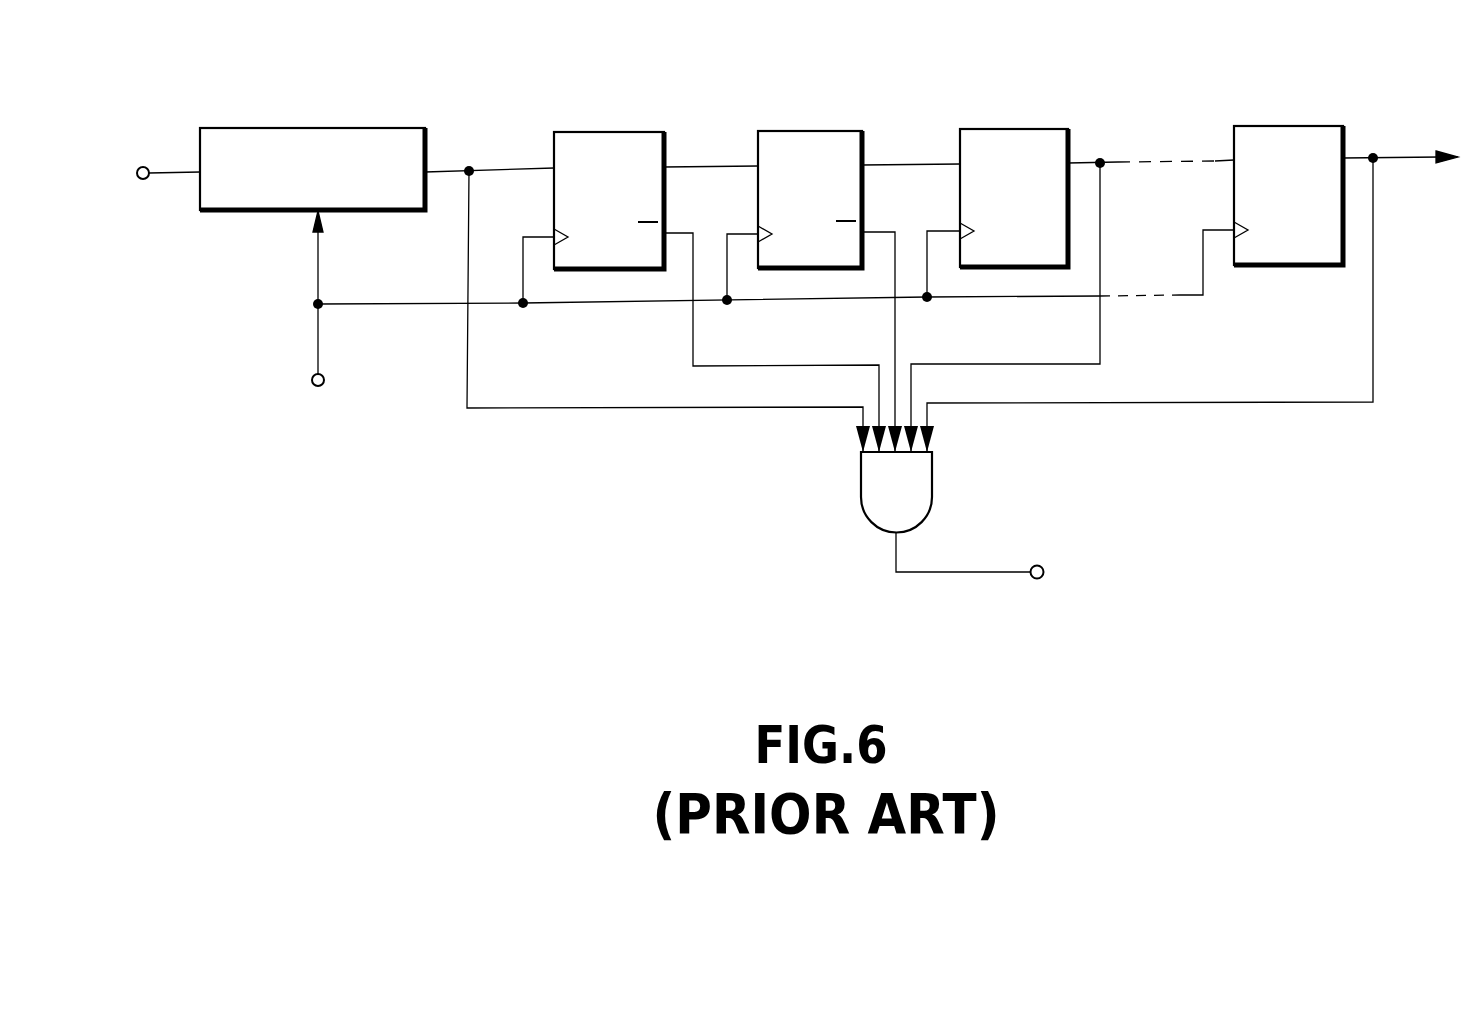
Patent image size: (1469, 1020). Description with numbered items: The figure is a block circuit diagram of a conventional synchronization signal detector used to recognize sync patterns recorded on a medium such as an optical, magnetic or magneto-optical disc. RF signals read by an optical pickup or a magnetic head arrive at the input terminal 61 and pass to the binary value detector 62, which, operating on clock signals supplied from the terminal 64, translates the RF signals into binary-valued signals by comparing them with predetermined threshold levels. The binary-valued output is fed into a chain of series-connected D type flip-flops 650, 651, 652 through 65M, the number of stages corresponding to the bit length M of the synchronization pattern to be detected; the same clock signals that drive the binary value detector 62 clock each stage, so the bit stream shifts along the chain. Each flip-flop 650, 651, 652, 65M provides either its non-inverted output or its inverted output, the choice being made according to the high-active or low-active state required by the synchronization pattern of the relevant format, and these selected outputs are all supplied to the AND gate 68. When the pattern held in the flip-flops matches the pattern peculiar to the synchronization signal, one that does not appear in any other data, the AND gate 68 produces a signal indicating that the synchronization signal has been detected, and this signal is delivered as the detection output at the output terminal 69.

The input terminal 61 is at (143, 166).
The binary value detector 62 is at (326, 128).
The terminal 64 is at (313, 375).
The D flip-flop 650 is at (612, 140).
The D flip-flop 651 is at (815, 137).
The D flip-flop 652 is at (1018, 135).
The D flip-flop 65M is at (1286, 132).
The AND gate 68 is at (871, 480).
The output terminal 69 is at (1044, 572).